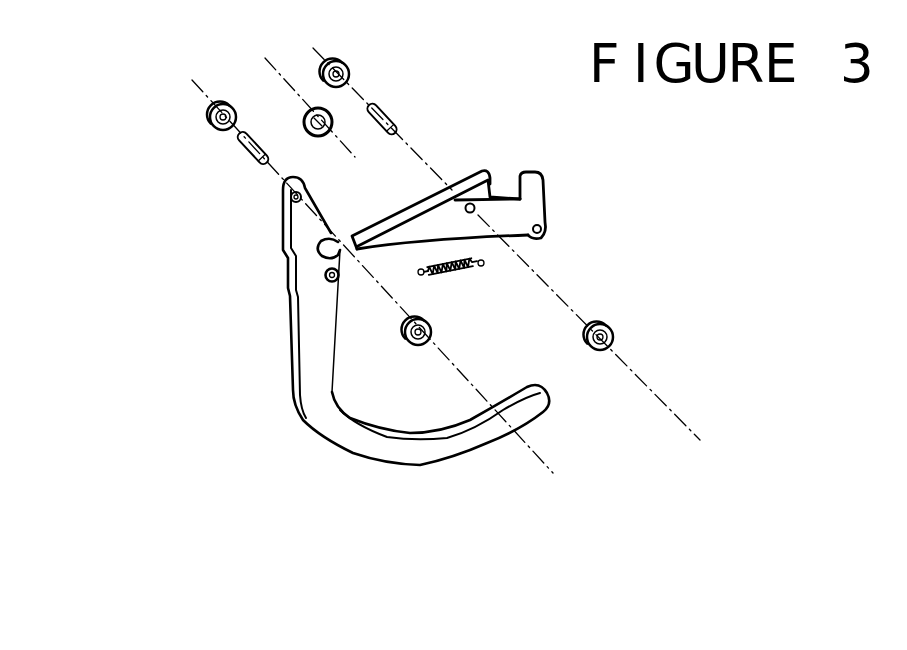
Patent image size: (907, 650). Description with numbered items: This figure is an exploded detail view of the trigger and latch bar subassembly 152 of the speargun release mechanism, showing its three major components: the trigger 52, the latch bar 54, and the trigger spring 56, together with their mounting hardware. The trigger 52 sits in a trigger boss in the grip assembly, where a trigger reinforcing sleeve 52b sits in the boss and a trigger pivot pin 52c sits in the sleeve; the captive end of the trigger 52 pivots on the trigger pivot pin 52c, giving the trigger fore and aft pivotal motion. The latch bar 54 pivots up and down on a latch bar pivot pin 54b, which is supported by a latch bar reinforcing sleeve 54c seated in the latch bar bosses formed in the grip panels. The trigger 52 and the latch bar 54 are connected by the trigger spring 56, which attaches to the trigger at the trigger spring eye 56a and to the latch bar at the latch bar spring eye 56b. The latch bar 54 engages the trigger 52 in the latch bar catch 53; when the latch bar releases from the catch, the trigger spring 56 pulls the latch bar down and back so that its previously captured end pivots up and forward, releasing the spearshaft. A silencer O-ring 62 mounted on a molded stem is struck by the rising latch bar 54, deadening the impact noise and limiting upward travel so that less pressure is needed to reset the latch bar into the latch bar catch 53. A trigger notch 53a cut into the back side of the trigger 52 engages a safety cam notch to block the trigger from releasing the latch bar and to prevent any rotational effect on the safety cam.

The bracket assembly 152 is at (262, 371).
The trigger 52 is at (313, 383).
The trigger reinforcing sleeve 52b is at (210, 115).
The trigger pivot pin 52c is at (238, 147).
The latch bar catch 53 is at (340, 235).
The trigger notch 53a is at (280, 283).
The latch bar 54 is at (547, 178).
The latch bar pivot pin 54b is at (400, 128).
The latch bar reinforcing sleeve 54c is at (349, 64).
The trigger spring 56 is at (500, 272).
The trigger spring eye 56a is at (340, 268).
The latch bar spring eye 56b is at (545, 222).
The silencer O-ring 62 is at (306, 114).